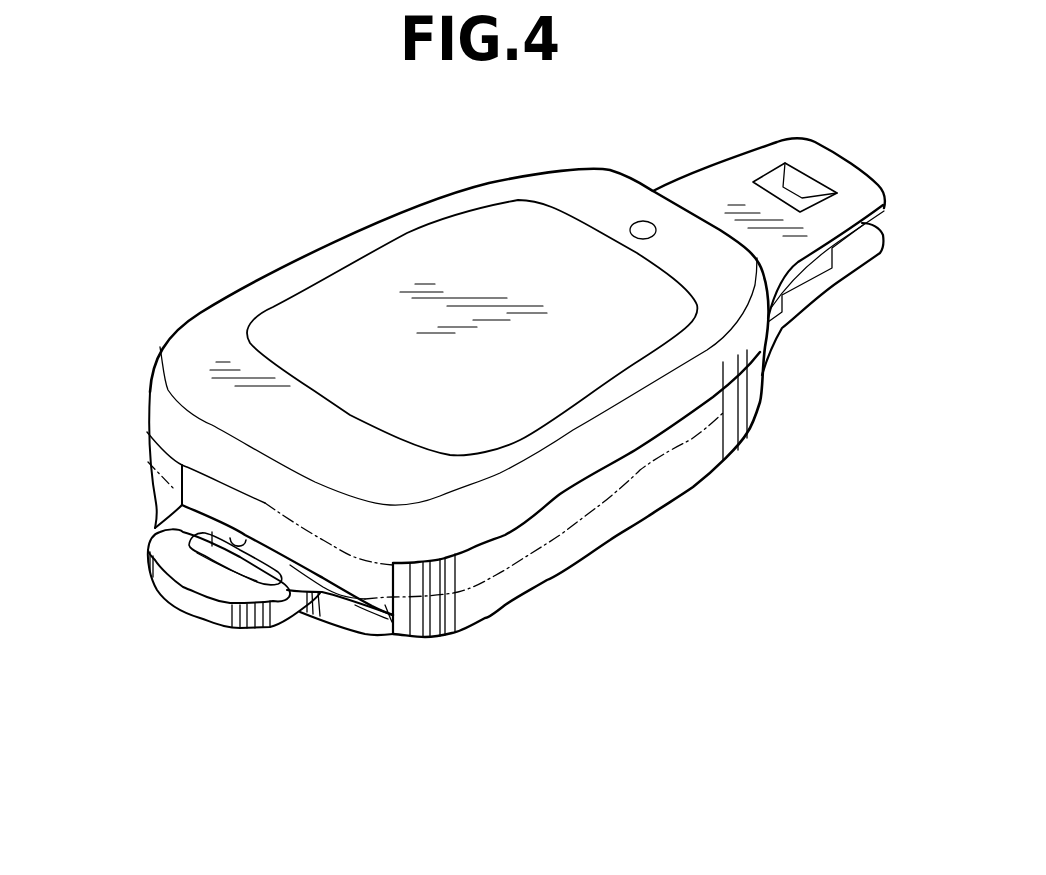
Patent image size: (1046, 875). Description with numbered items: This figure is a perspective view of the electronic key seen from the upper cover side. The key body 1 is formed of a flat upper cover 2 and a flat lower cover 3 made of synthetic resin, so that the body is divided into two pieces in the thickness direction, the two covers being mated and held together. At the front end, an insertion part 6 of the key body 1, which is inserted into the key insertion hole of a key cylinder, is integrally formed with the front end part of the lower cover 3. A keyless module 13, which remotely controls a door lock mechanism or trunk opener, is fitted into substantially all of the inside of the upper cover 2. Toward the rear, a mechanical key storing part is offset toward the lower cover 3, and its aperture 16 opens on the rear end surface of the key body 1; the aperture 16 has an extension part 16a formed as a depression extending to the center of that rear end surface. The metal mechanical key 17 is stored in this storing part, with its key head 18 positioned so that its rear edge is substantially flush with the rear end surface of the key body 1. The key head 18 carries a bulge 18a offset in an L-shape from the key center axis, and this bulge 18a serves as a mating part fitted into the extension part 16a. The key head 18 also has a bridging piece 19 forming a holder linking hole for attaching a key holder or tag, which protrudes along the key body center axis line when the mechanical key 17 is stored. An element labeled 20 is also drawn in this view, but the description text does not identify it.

The key body 1 is at (348, 227).
The upper cover 2 is at (228, 318).
The lower cover 3 is at (662, 507).
The insertion part 6 is at (727, 182).
The keyless module 13 is at (483, 247).
The aperture 16 is at (393, 632).
The extension part 16a is at (250, 543).
The mechanical key 17 is at (370, 620).
The key head 18 is at (338, 612).
The bulge 18a is at (252, 562).
The bridging piece 19 is at (177, 611).
The tab 20 is at (160, 531).